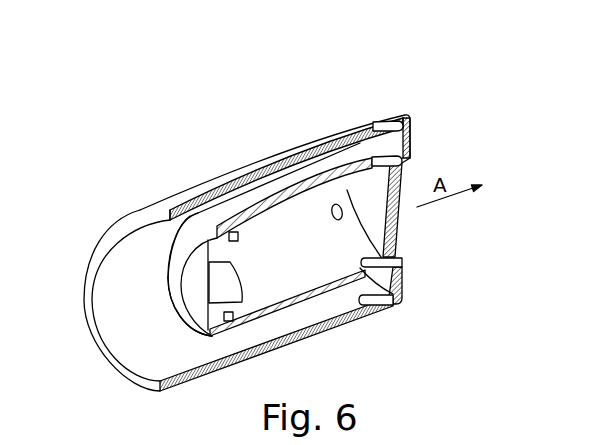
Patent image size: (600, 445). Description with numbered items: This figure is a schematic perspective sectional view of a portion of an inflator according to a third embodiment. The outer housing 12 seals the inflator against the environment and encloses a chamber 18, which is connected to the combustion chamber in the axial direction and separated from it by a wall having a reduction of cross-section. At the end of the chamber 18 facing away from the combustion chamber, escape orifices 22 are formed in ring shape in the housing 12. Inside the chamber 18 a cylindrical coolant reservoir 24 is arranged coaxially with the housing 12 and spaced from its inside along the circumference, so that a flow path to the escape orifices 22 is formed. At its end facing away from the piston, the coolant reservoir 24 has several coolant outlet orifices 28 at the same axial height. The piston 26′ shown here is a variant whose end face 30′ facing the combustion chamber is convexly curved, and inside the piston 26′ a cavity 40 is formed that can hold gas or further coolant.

The housing 12 is at (329, 137).
The chamber 18 is at (246, 186).
The escape orifices 22 is at (388, 124).
The coolant reservoir 24 is at (278, 235).
The piston 26′ is at (196, 316).
The coolant outlet orifices 28 is at (412, 153).
The end face 30′ is at (175, 282).
The cavity 40 is at (235, 297).